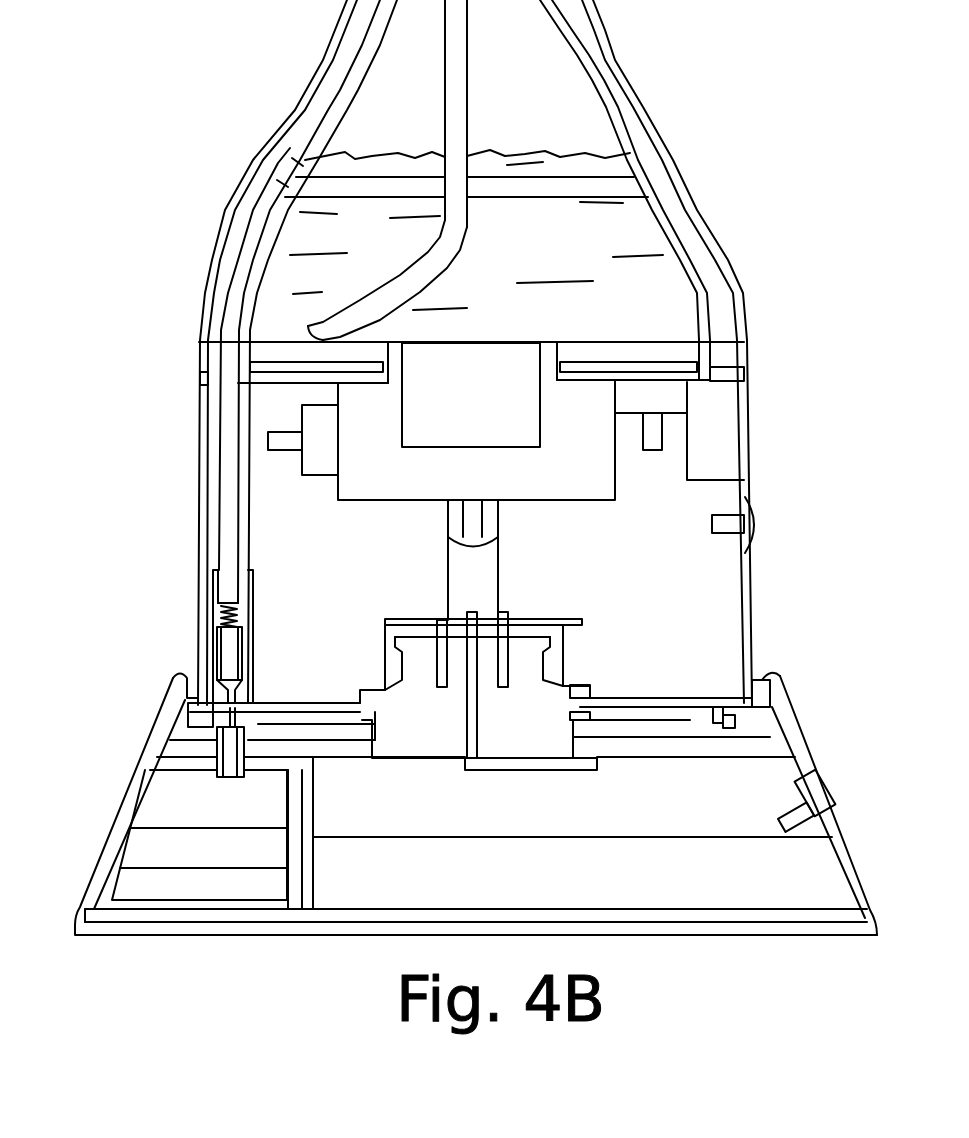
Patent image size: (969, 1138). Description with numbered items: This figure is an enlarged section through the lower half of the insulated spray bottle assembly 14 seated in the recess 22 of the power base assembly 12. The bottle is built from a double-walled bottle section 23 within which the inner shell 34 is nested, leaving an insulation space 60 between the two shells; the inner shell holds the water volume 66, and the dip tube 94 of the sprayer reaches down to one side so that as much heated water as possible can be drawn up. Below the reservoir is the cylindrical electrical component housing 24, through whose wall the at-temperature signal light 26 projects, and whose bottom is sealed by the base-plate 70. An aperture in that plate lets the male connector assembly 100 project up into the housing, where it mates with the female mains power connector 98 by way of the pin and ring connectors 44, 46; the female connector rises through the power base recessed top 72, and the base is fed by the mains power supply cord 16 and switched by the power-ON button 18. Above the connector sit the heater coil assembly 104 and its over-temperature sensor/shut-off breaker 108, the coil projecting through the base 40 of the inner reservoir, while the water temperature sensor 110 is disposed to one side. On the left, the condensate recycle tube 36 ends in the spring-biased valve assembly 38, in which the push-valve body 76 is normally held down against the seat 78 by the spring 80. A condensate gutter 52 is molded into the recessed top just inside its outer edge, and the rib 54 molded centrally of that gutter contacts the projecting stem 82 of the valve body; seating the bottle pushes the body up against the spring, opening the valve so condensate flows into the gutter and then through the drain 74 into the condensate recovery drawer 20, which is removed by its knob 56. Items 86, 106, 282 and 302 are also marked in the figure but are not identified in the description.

The power base assembly 12 is at (803, 724).
The insulated spray bottle assembly 14 is at (784, 363).
The mains power supply cord 16 is at (553, 772).
The power-ON button 18 is at (816, 792).
The condensate recovery drawer 20 is at (135, 792).
The recess 22 is at (757, 668).
The double-walled bottle section 23 is at (645, 106).
The electrical component housing 24 is at (197, 432).
The at-temperature signal light 26 is at (759, 522).
The inner shell 34 is at (636, 162).
The condensate recycle tube 36 is at (228, 460).
The spring-biased valve assembly 38 is at (262, 653).
The base of the inner bottle water reservoir 40 is at (622, 358).
The pin connector 44 is at (478, 617).
The ring connector 46 is at (505, 619).
The condensate gutter 52 is at (240, 722).
The rib 54 is at (226, 724).
The knob 56 is at (116, 864).
The insulation space 60 is at (690, 206).
The water volume 66 is at (515, 97).
The base-plate 70 is at (628, 700).
The power base recessed top 72 is at (635, 722).
The drain 74 is at (226, 778).
The push-valve body 76 is at (235, 675).
The seat 78 is at (250, 700).
The spring 80 is at (240, 616).
The projecting stem 82 is at (228, 705).
The stub 86 is at (705, 703).
The dip tube 94 is at (462, 228).
The female mains power connector 98 is at (530, 729).
The male connector assembly 100 is at (563, 642).
The heater coil assembly 104 is at (585, 477).
The liquid 106 is at (515, 294).
The over-temperature sensor/shut-off breaker 108 is at (322, 462).
The water temperature sensor 110 is at (677, 403).
The neck inner wall 282 is at (212, 268).
The neck 302 is at (345, 26).